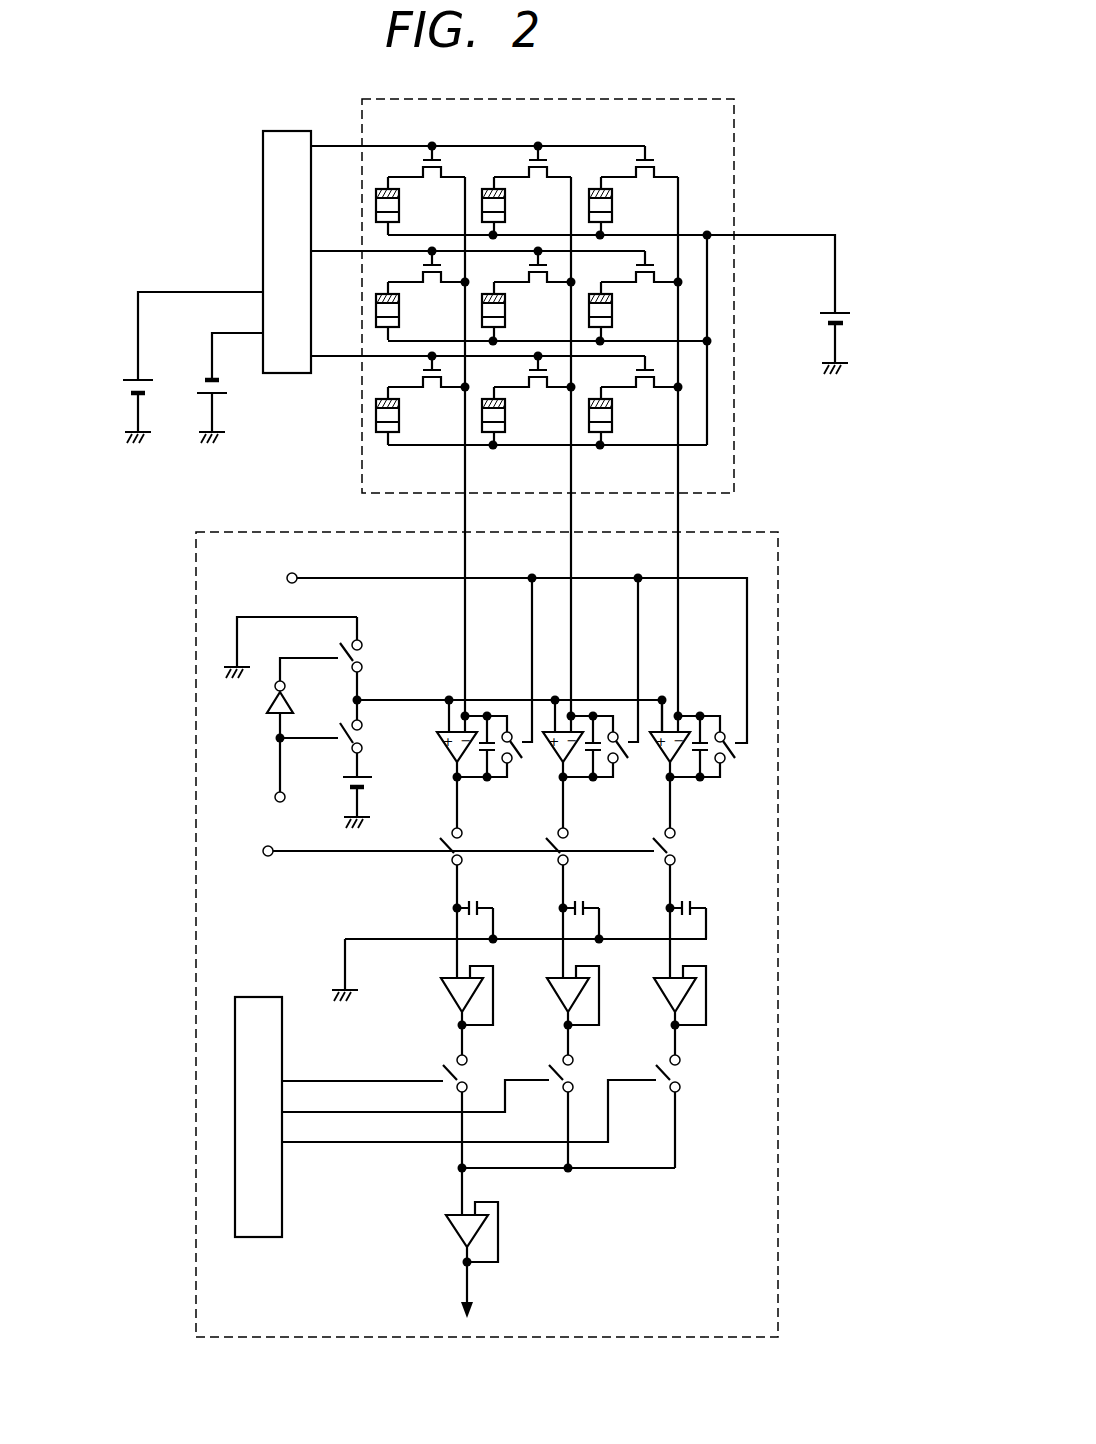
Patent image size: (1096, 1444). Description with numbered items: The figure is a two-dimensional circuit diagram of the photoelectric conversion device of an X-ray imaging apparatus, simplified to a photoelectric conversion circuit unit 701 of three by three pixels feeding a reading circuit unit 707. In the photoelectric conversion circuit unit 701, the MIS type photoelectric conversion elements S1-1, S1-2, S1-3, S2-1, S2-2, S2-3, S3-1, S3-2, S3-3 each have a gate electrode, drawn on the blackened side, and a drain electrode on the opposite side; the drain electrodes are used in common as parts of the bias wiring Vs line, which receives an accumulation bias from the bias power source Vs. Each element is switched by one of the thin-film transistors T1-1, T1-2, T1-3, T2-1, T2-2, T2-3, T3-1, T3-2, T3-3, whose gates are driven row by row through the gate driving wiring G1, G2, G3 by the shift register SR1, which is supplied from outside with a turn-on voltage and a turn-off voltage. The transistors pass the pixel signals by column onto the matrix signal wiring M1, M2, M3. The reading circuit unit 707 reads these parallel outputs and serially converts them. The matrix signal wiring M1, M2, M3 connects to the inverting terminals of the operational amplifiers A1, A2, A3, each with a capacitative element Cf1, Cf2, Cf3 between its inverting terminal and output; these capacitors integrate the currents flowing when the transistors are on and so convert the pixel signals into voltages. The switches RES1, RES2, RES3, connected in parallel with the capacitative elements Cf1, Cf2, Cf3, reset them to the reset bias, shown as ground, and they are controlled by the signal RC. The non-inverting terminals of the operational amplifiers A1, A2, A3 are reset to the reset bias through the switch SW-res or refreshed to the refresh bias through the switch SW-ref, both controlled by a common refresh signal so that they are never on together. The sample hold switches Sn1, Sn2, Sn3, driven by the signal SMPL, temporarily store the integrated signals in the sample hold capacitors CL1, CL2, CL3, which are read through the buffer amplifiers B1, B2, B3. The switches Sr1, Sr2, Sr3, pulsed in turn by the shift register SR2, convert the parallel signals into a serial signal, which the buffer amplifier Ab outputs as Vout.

The photoelectric conversion circuit unit 701 is at (600, 407).
The reading circuit unit 707 is at (484, 934).
The shift register SR1 is at (287, 252).
The shift register SR2 is at (445, 1117).
The gate driving wiring G1 is at (478, 132).
The gate driving wiring G2 is at (478, 237).
The gate driving wiring G3 is at (478, 342).
The matrix signal wiring M1 is at (448, 446).
The matrix signal wiring M2 is at (554, 446).
The matrix signal wiring M3 is at (661, 446).
The switching element (TFT) T1-1 is at (418, 165).
The switching element (TFT) T1-2 is at (524, 165).
The switching element (TFT) T1-3 is at (630, 165).
The switching element (TFT) T2-1 is at (418, 270).
The switching element (TFT) T2-2 is at (524, 270).
The switching element (TFT) T2-3 is at (630, 270).
The switching element (TFT) T3-1 is at (418, 375).
The switching element (TFT) T3-2 is at (524, 375).
The switching element (TFT) T3-3 is at (630, 375).
The MIS type photoelectric conversion element S1-1 is at (414, 212).
The MIS type photoelectric conversion element S1-2 is at (520, 212).
The MIS type photoelectric conversion element S1-3 is at (626, 212).
The MIS type photoelectric conversion element S2-1 is at (414, 317).
The MIS type photoelectric conversion element S2-2 is at (520, 317).
The MIS type photoelectric conversion element S2-3 is at (626, 317).
The MIS type photoelectric conversion element S3-1 is at (414, 422).
The MIS type photoelectric conversion element S3-2 is at (520, 422).
The MIS type photoelectric conversion element S3-3 is at (626, 422).
The bias wiring (Vs line) / bias power source Vs is at (631, 289).
The reset control signal RC is at (512, 646).
The reset switch SW-res is at (386, 668).
The refresh switch SW-ref is at (332, 748).
The operational amplifier A1 is at (444, 762).
The operational amplifier A2 is at (555, 762).
The operational amplifier A3 is at (662, 762).
The capacitative element Cf1 is at (487, 714).
The capacitative element Cf2 is at (597, 714).
The capacitative element Cf3 is at (704, 714).
The reset switch RES1 is at (519, 764).
The reset switch RES2 is at (627, 764).
The reset switch RES3 is at (733, 764).
The sample hold switch Sn1 is at (433, 865).
The sample hold switch Sn2 is at (540, 865).
The sample hold switch Sn3 is at (647, 865).
The sample hold capacitor CL1 is at (449, 920).
The sample hold capacitor CL2 is at (557, 920).
The sample hold capacitor CL3 is at (664, 920).
The buffer amplifier B1 is at (451, 997).
The buffer amplifier B2 is at (558, 997).
The buffer amplifier B3 is at (665, 997).
The serial conversion switch Sr1 is at (432, 1108).
The serial conversion switch Sr2 is at (541, 1108).
The serial conversion switch Sr3 is at (648, 1108).
The sample signal SMPL is at (448, 869).
The buffer amplifier Ab is at (456, 1236).
The output signal Vout is at (493, 1310).